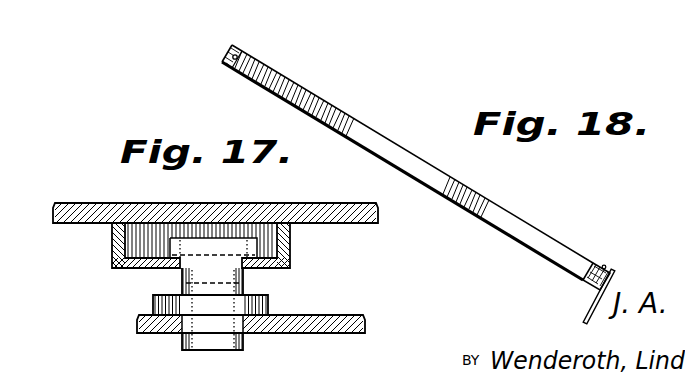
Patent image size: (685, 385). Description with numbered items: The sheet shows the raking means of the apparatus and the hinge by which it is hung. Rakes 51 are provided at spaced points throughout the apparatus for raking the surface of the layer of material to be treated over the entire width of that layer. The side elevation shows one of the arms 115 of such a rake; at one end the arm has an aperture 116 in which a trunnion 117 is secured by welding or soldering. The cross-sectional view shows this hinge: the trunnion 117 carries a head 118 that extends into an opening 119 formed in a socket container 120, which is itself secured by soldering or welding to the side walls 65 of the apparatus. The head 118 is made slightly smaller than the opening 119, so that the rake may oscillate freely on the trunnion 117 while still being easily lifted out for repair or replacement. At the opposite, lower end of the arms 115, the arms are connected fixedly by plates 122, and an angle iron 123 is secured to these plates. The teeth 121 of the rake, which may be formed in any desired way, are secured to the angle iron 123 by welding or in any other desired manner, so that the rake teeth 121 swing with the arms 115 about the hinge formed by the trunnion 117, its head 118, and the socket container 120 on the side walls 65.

In FIG. 17, the side walls 65 is at (80, 203).
In FIG. 17, the head 118 is at (227, 242).
In FIG. 17, the socket container 120 is at (112, 243).
In FIG. 17, the opening 119 is at (162, 269).
In FIG. 17, the trunnion 117 is at (246, 287).
In FIG. 17, the arms 115 is at (313, 327).
In FIG. 18, the arms 115 is at (360, 125).
In FIG. 18, the aperture 116 is at (243, 53).
In FIG. 18, the rakes 51 is at (556, 248).
In FIG. 18, the plates 122 is at (597, 278).
In FIG. 18, the angle iron 123 is at (604, 266).
In FIG. 18, the teeth 121 is at (590, 316).